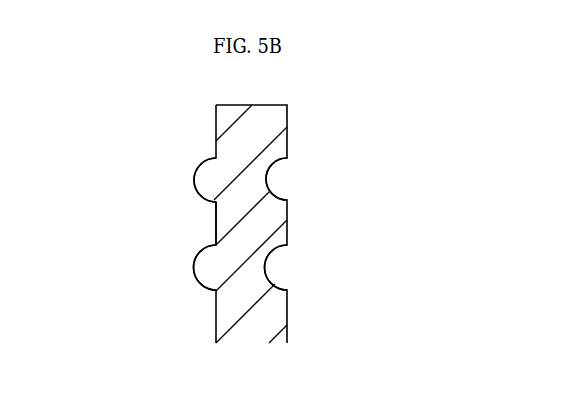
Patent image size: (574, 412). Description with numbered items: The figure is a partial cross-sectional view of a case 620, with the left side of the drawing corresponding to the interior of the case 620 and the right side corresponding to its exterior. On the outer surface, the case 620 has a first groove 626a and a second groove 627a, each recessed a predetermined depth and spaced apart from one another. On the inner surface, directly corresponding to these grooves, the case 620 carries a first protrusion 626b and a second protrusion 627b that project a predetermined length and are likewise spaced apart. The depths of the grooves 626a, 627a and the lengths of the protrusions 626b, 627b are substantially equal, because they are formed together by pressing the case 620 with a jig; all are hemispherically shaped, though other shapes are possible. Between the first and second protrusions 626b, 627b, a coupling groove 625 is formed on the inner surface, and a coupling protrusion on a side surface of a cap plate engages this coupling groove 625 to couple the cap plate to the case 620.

The case 620 is at (273, 122).
The coupling groove 625 is at (202, 226).
The first groove 626a is at (278, 185).
The first protrusion 626b is at (206, 178).
The second groove 627a is at (278, 272).
The second protrusion 627b is at (206, 262).